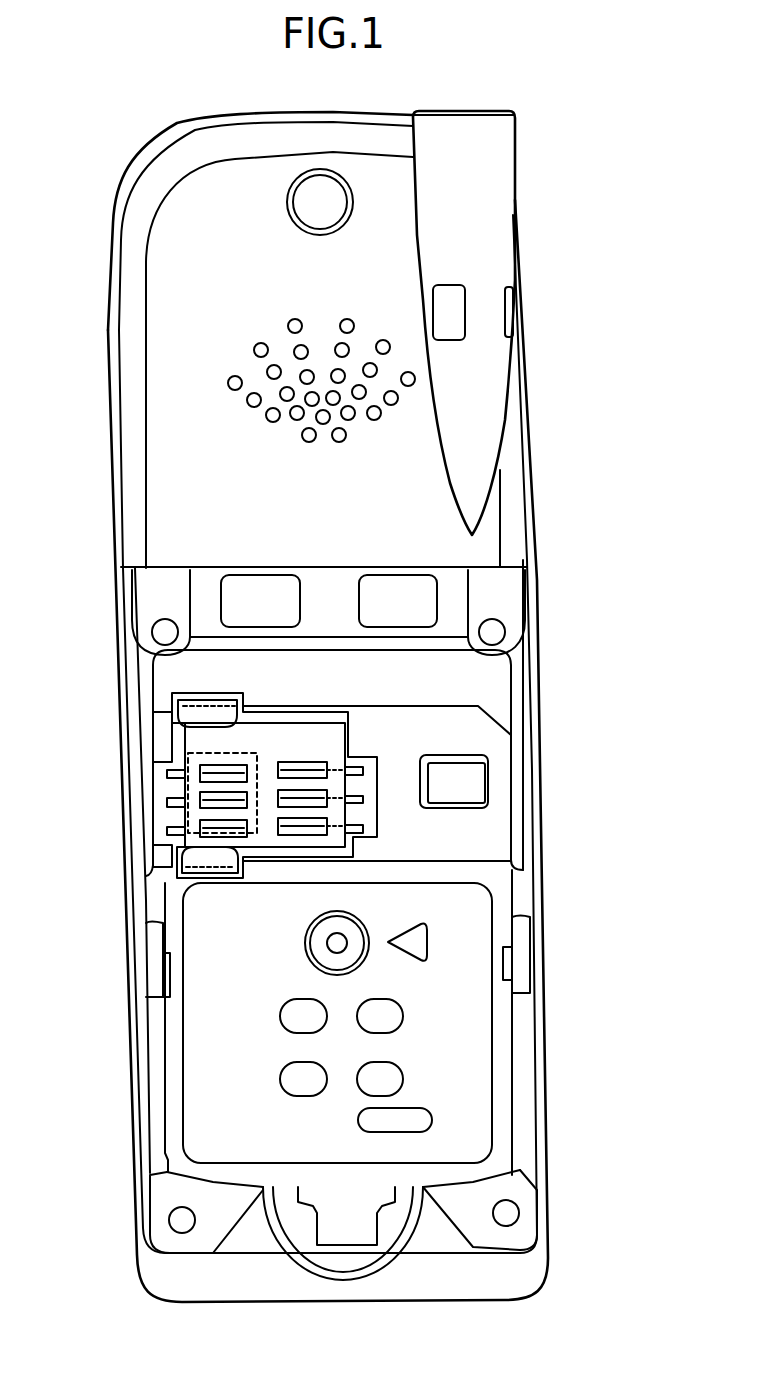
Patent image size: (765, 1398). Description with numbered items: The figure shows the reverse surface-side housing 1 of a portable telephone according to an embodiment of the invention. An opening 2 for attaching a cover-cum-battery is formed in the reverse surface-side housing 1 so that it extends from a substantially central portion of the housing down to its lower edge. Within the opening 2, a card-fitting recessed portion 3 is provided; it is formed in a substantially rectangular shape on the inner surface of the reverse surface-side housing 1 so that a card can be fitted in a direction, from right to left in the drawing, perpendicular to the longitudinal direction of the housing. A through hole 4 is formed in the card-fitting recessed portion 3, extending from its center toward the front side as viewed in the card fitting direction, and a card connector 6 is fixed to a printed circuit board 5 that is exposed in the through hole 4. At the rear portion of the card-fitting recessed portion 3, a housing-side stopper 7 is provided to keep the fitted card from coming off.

The reverse surface-side housing 1 is at (550, 407).
The opening 2 is at (103, 573).
The card-fitting recessed portion 3 is at (470, 720).
The through hole 4 is at (377, 787).
The printed circuit board 5 is at (367, 830).
The card connector 6 is at (307, 728).
The housing-side stopper 7 is at (475, 774).